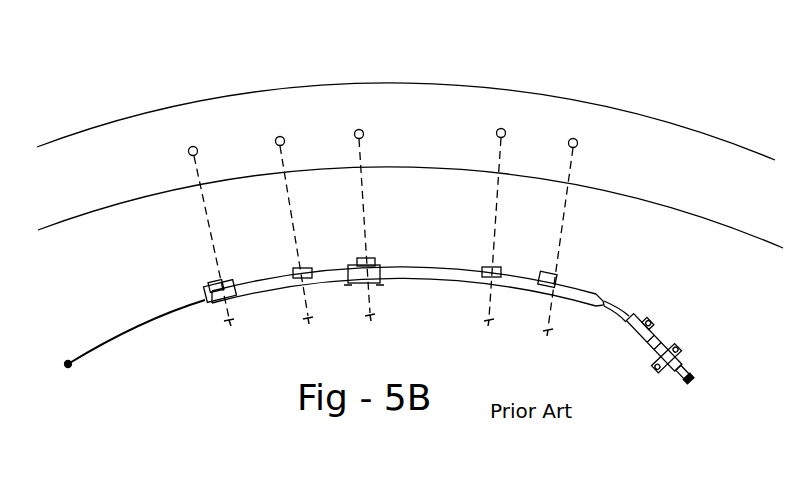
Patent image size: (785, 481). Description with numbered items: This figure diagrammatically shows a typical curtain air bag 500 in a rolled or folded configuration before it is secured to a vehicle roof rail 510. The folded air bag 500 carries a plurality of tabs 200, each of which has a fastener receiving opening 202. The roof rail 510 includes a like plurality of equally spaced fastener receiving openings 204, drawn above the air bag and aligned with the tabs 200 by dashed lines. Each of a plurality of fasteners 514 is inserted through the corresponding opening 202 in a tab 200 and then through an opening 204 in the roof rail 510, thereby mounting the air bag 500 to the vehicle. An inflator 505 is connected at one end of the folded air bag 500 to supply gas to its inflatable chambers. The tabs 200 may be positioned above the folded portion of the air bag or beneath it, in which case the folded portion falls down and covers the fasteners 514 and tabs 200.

The vehicle roof rail 510 is at (73, 135).
The fastener receiving openings 204 is at (197, 146).
The curtain air bag 500 is at (271, 268).
The fastener receiving opening 202 is at (212, 283).
The tab 200 is at (219, 282).
The fastener 514 is at (229, 326).
The inflator 505 is at (650, 350).